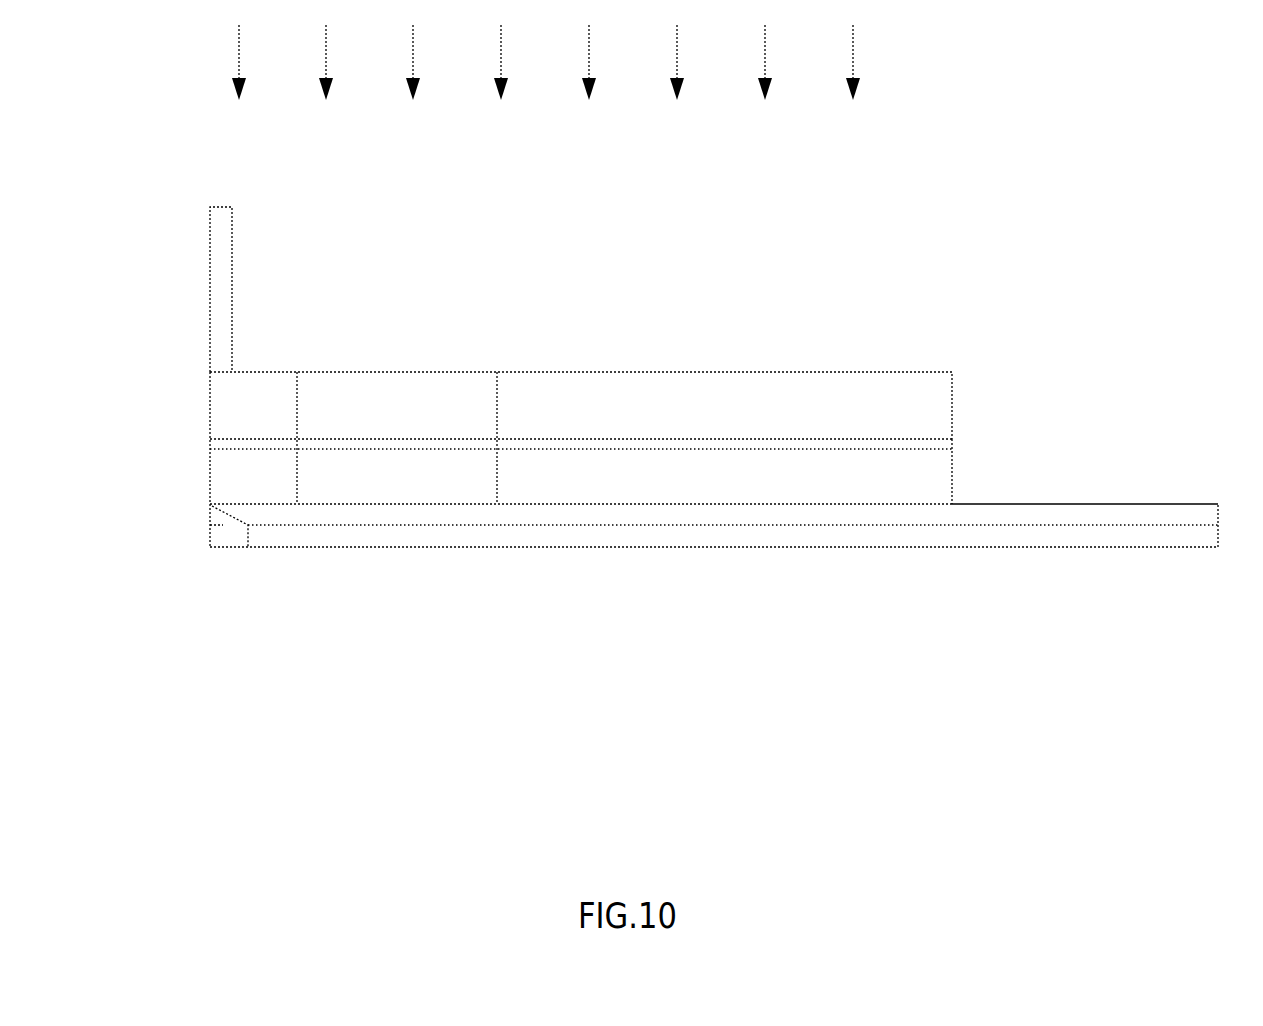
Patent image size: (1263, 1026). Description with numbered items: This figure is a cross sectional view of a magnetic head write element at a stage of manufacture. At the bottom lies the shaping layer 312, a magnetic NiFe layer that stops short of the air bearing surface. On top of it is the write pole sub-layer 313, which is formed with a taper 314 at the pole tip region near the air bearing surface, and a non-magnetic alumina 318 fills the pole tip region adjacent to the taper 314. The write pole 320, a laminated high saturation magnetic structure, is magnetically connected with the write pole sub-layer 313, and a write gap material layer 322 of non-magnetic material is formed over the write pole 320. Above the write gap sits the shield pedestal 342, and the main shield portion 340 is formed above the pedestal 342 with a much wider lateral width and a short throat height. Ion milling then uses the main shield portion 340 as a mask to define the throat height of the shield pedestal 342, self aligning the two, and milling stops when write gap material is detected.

The shaping layer 312 is at (1083, 533).
The write pole sub-layer 313 is at (1050, 512).
The taper 314 is at (224, 546).
The alumina 318 is at (210, 525).
The write pole 320 is at (243, 488).
The write gap material layer 322 is at (222, 443).
The main shield portion 340 is at (210, 279).
The shield pedestal 342 is at (260, 392).